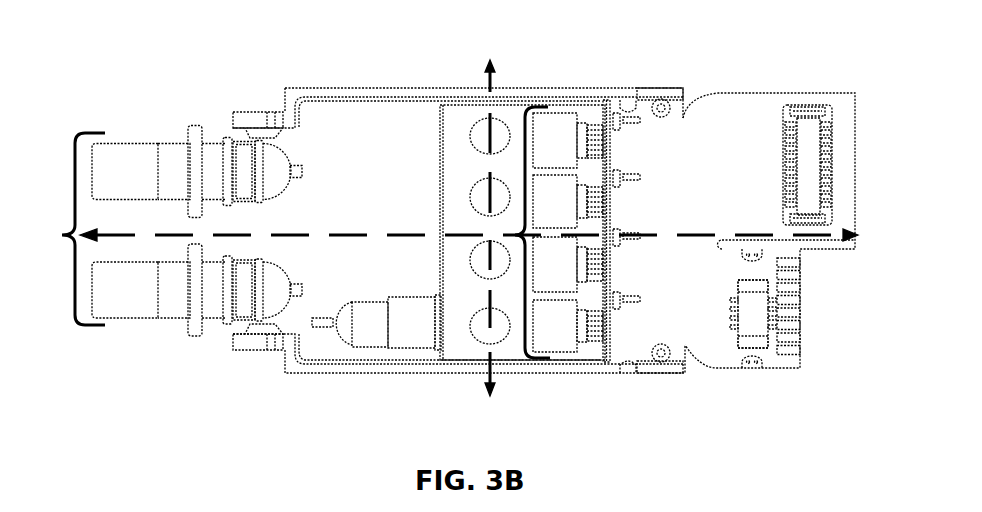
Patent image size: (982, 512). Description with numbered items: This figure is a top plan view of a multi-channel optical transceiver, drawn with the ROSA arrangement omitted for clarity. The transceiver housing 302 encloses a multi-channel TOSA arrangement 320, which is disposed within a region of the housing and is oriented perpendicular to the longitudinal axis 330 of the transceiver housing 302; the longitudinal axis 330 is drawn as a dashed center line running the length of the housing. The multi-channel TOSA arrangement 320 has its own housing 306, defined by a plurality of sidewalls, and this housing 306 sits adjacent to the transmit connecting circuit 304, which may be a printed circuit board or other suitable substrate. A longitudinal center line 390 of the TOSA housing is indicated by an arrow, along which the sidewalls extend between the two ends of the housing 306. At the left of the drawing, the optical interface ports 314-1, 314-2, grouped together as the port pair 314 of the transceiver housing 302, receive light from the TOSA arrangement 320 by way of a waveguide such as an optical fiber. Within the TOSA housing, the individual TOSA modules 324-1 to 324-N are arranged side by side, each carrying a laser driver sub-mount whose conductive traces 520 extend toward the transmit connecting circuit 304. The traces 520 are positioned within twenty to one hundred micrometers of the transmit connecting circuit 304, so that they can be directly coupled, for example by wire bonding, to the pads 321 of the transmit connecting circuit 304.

The transceiver housing 302 is at (565, 370).
The transmit connecting circuit 304 is at (675, 338).
The housing 306 is at (450, 150).
The lens assembly 314 is at (78, 327).
The optical interface port 314-1 is at (136, 172).
The second lens 314-2 is at (123, 298).
The multi-channel TOSA arrangement 320 is at (453, 370).
The pads 321 is at (608, 318).
The first imaging module 324-1 is at (471, 232).
The Nth imaging module 324-N is at (513, 233).
The longitudinal axis 330 is at (658, 234).
The longitudinal center line 390 is at (493, 62).
The traces 520 is at (597, 342).